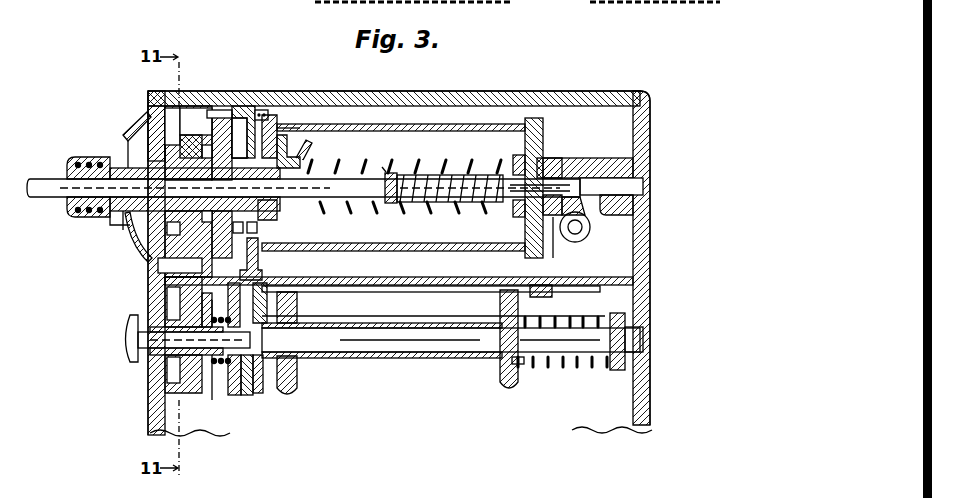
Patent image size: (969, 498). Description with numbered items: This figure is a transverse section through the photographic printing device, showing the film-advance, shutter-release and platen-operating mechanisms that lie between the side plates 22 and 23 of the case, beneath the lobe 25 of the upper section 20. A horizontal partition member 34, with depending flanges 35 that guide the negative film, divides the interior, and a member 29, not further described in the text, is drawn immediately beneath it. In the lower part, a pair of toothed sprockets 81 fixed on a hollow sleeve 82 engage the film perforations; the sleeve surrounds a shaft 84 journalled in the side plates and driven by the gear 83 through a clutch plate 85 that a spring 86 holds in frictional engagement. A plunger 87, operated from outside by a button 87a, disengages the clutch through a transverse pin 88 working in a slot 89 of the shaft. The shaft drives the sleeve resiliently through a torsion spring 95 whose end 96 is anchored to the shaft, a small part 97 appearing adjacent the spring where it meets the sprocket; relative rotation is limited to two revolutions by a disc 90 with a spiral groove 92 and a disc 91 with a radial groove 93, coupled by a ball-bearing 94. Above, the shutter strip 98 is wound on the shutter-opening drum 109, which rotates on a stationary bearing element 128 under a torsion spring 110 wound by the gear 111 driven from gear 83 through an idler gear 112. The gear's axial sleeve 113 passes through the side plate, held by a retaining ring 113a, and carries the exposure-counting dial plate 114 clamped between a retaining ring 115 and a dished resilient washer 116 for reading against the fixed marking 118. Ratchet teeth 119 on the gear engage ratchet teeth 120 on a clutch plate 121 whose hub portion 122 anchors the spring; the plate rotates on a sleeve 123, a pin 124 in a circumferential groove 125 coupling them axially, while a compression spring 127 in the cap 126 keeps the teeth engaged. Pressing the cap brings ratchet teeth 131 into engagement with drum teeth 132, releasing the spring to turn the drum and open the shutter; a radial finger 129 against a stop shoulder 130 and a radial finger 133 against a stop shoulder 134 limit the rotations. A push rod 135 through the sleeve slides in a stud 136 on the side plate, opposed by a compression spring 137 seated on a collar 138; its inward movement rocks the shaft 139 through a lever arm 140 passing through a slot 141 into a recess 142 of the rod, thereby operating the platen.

The upper section 20 is at (608, 92).
The side plate 22 is at (148, 410).
The side plate 23 is at (650, 118).
The lobe 25 is at (462, 92).
The guide tube 29 is at (405, 292).
The partition member 34 is at (370, 279).
The depending flanges 35 is at (552, 293).
The toothed sprockets 81 is at (300, 385).
The hollow tube or sleeve 82 is at (428, 358).
The gear 83 is at (190, 300).
The shaft 84 is at (385, 342).
The clutch plate 85 is at (200, 386).
The spring 86 is at (217, 370).
The plunger 87 is at (150, 340).
The button 87a is at (121, 342).
The transverse pin 88 is at (195, 352).
The slot 89 is at (224, 312).
The disc 90 is at (236, 396).
The disc 91 is at (248, 396).
The spiral groove 92 is at (260, 393).
The radial groove 93 is at (252, 300).
The ball-bearing 94 is at (262, 286).
The torsion spring 95 is at (560, 364).
The end of the spring 96 is at (612, 316).
The spring seat 97 is at (518, 364).
The shutter strip 98 is at (438, 248).
The shutter-opening drum 109 is at (400, 126).
The torsion spring 110 is at (384, 167).
The gear 111 is at (180, 138).
The idler gear 112 is at (152, 278).
The axial sleeve 113 is at (148, 232).
The retaining ring or band 113a is at (125, 250).
The circular dial plate 114 is at (135, 137).
The retaining ring 115 is at (120, 164).
The dished, resilient washer 116 is at (123, 153).
The fixed marking 118 is at (148, 95).
The ratchet teeth 119 is at (178, 110).
The ratchet teeth 120 is at (198, 118).
The clutch plate 121 is at (220, 113).
The hub portion 122 is at (278, 208).
The sleeve 123 is at (115, 222).
The pin 124 is at (280, 158).
The circumferential groove 125 is at (280, 228).
The cap 126 is at (68, 166).
The compression spring 127 is at (76, 150).
The stationary bearing element 128 is at (524, 160).
The radial finger 129 is at (225, 113).
The stop shoulder 130 is at (236, 113).
The ratchet teeth 131 is at (237, 113).
The ratchet teeth 132 is at (305, 92).
The radial finger 133 is at (260, 110).
The stop shoulder 134 is at (275, 118).
The push rod 135 is at (50, 186).
The stud 136 is at (605, 165).
The compression spring 137 is at (470, 200).
The collar 138 is at (396, 205).
The shaft 139 is at (575, 228).
The lever arm 140 is at (560, 217).
The slot 141 is at (596, 200).
The recess 142 is at (569, 160).